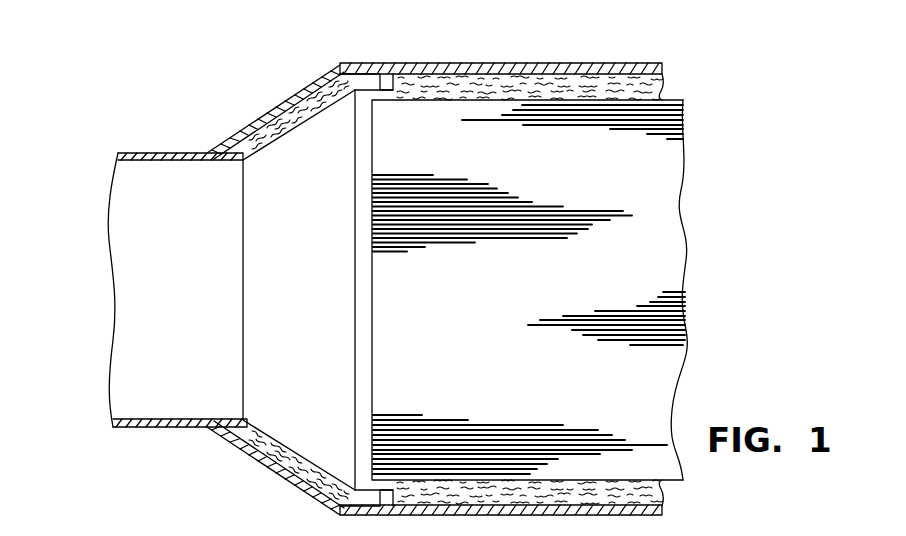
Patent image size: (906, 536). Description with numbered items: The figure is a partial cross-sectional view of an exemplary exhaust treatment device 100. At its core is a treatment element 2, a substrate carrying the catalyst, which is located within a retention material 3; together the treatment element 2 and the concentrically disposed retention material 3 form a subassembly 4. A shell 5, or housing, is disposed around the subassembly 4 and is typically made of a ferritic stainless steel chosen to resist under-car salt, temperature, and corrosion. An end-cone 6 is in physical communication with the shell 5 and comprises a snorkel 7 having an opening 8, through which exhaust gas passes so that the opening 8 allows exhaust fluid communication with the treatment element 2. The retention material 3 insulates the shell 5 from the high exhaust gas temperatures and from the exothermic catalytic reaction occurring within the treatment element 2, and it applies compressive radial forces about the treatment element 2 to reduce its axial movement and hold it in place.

The exhaust treatment device 100 is at (157, 73).
The treatment element 2 is at (684, 128).
The retention material 3 is at (587, 87).
The subassembly 4 is at (459, 291).
The shell 5 is at (392, 63).
The end-cone 6 is at (290, 118).
The snorkel 7 is at (149, 428).
The opening 8 is at (110, 233).